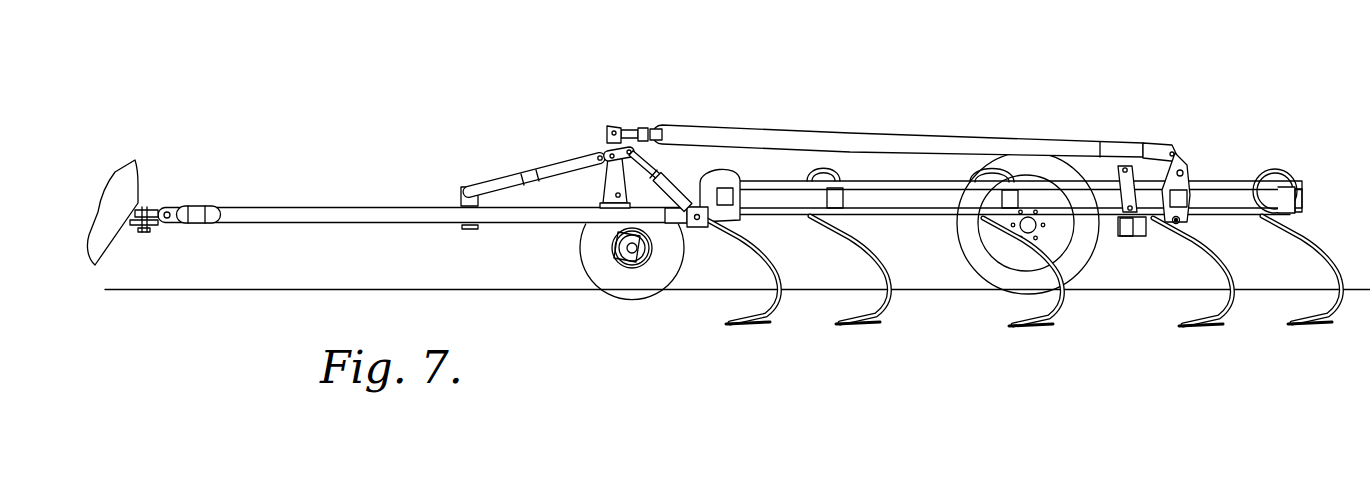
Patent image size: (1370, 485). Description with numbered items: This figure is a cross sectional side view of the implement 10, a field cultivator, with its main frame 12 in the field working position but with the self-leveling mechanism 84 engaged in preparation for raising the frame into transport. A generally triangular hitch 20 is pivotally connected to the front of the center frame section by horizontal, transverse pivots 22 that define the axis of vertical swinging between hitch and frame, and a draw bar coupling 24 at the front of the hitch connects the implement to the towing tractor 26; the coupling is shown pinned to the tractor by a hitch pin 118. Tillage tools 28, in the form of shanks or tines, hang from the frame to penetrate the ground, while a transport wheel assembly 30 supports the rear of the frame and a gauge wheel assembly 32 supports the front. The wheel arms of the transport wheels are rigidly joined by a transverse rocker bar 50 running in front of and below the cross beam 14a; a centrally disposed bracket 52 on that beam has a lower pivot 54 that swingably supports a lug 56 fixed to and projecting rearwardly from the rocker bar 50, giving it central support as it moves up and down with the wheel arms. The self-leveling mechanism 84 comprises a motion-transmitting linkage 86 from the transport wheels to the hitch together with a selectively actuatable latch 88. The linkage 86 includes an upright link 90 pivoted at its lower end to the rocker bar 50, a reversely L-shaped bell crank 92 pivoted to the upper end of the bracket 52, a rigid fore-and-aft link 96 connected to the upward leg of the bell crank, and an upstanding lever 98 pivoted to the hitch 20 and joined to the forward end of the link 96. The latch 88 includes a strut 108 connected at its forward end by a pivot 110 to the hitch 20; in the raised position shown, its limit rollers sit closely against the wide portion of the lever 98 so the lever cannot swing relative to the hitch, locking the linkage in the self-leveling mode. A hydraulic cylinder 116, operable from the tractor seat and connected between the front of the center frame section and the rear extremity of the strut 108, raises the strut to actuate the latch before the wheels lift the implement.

The implement 10 is at (1043, 68).
The main frame 12 is at (1262, 168).
The cross beam 14a is at (1188, 189).
The hitch 20 is at (298, 200).
The pivots 22 is at (697, 222).
The draw bar coupling 24 is at (157, 232).
The tractor 26 is at (137, 172).
The tillage tools 28 is at (775, 268).
The transport wheel assembly 30 is at (960, 263).
The gauge wheel assembly 32 is at (578, 255).
The rocker bar 50 is at (1130, 236).
The bracket 52 is at (1172, 180).
The lower pivot 54 is at (1180, 221).
The lug 56 is at (1157, 228).
The self-leveling mechanism 84 is at (887, 110).
The linkage 86 is at (1152, 135).
The latch 88 is at (573, 150).
The upright link 90 is at (1110, 147).
The bell crank 92 is at (1156, 170).
The link 96 is at (720, 133).
The lever 98 is at (612, 181).
The strut 108 is at (522, 178).
The pivot 110 is at (468, 187).
The hydraulic cylinder 116 is at (690, 200).
The hitch pin 118 is at (169, 218).